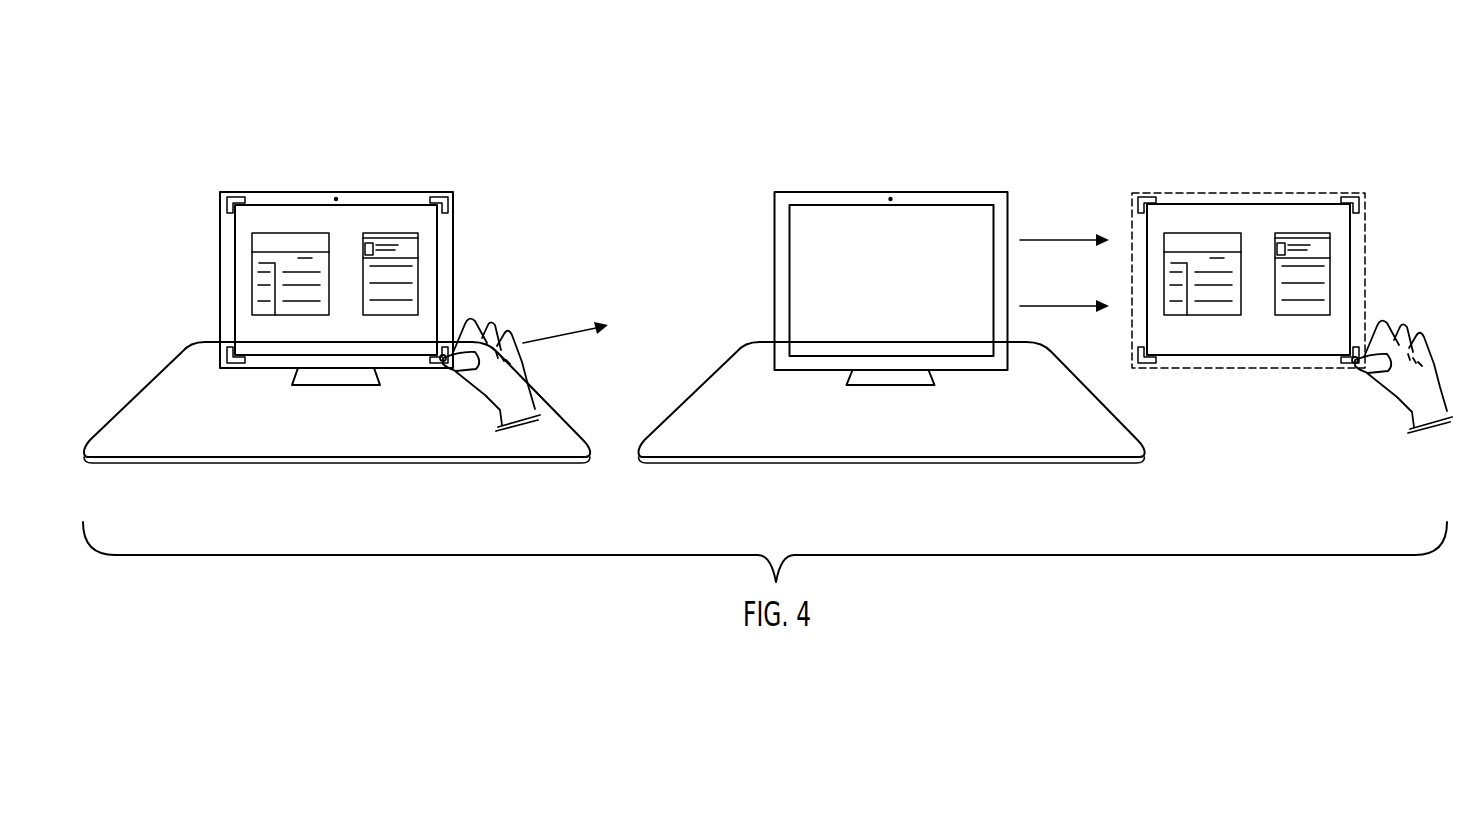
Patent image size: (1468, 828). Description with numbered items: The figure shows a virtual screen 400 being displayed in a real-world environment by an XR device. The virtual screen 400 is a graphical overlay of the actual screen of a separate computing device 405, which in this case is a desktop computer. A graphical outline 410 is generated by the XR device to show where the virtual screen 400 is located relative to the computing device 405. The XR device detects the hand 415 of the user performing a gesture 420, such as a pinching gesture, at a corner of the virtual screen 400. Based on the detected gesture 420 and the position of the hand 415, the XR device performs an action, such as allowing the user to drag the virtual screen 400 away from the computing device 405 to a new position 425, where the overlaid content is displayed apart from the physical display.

The virtual screen 400 is at (406, 186).
The separate computing device 405 is at (274, 188).
The graphical outline 410 is at (444, 184).
The hand 415 is at (524, 311).
The gesture 420 is at (500, 388).
The new position 425 is at (1248, 157).